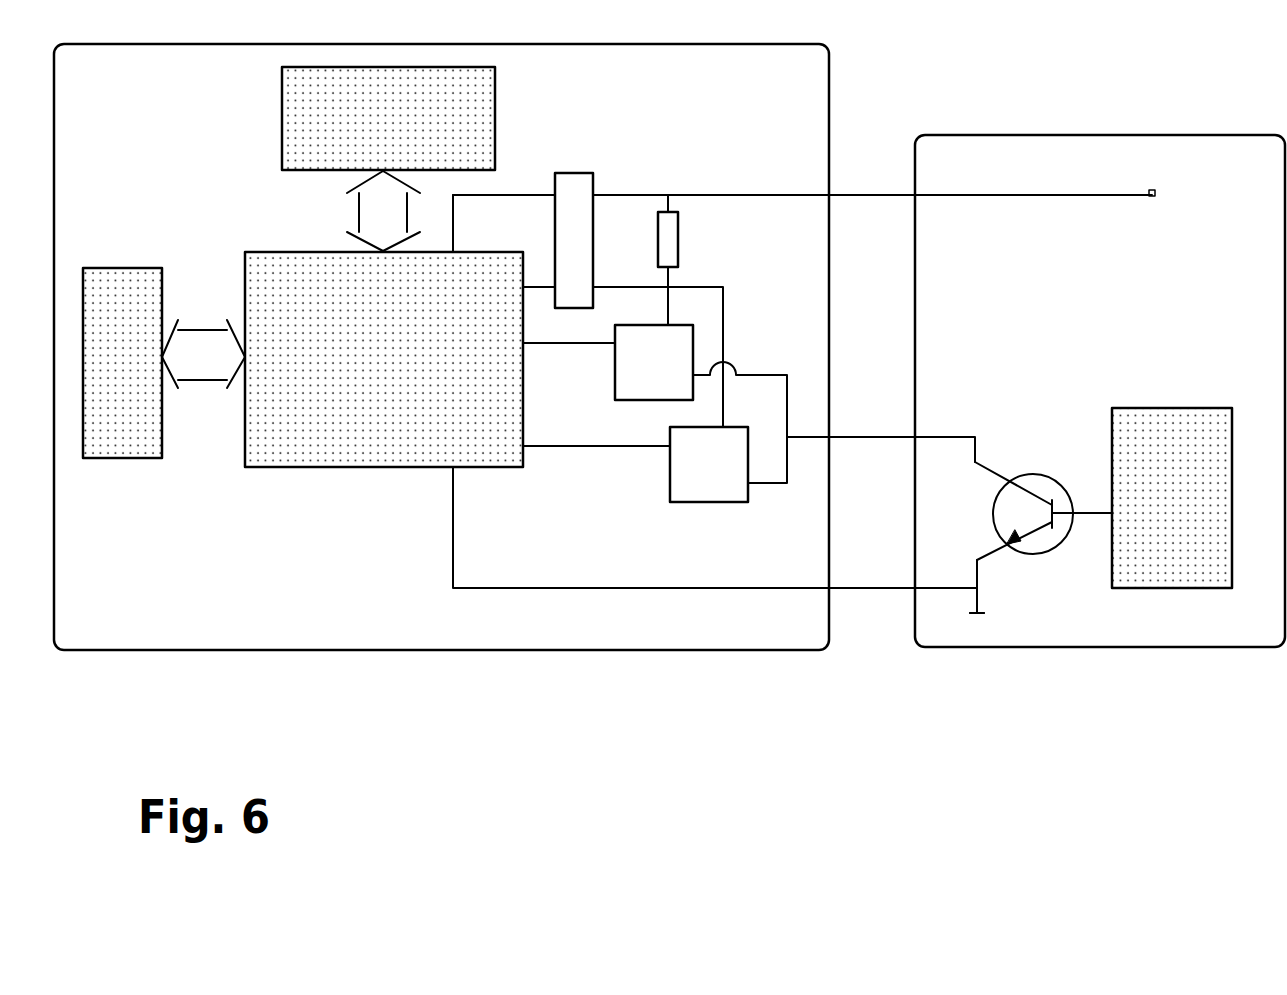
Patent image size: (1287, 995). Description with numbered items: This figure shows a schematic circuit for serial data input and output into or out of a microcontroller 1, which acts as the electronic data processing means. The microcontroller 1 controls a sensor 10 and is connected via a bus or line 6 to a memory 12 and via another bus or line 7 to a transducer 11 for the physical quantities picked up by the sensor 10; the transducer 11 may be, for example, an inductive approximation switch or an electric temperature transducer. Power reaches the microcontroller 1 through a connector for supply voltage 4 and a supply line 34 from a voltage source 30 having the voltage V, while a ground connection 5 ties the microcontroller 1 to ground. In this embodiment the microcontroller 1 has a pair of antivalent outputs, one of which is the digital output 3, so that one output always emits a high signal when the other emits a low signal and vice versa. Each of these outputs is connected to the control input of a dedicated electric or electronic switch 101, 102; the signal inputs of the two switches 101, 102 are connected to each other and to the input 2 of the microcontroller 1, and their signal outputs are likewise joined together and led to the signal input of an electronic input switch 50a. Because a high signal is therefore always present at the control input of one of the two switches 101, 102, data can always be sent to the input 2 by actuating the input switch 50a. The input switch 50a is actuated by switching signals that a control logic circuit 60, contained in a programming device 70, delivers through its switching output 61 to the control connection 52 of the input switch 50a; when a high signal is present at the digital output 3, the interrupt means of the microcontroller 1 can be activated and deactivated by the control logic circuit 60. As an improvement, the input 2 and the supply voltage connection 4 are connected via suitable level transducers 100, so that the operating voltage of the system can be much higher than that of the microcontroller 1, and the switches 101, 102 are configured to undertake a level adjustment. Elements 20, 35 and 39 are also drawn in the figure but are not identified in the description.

The microcontroller 1 is at (368, 380).
The input 2 is at (605, 351).
The digital output 3 is at (551, 346).
The supply voltage connection 4 is at (445, 247).
The ground connection 5 is at (550, 449).
The bus or line 6 is at (373, 212).
The bus or line 7 is at (208, 367).
The sensor 10 is at (175, 163).
The transducer 11 is at (477, 108).
The memory 12 is at (117, 432).
The resistor 20 is at (670, 238).
The voltage source 30 is at (1154, 220).
The supply line 34 is at (880, 193).
The control line 35 is at (890, 437).
The microcontroller pin 39 is at (516, 444).
The electronic input switch 50a is at (1038, 477).
The control connection 52 is at (987, 608).
The control logic circuit 60 is at (1210, 462).
The switching output 61 is at (1112, 516).
The programming device 70 is at (1100, 391).
The level transducers 100 is at (573, 178).
The electric or electronic switch 101 is at (630, 373).
The electric or electronic switch 102 is at (703, 493).